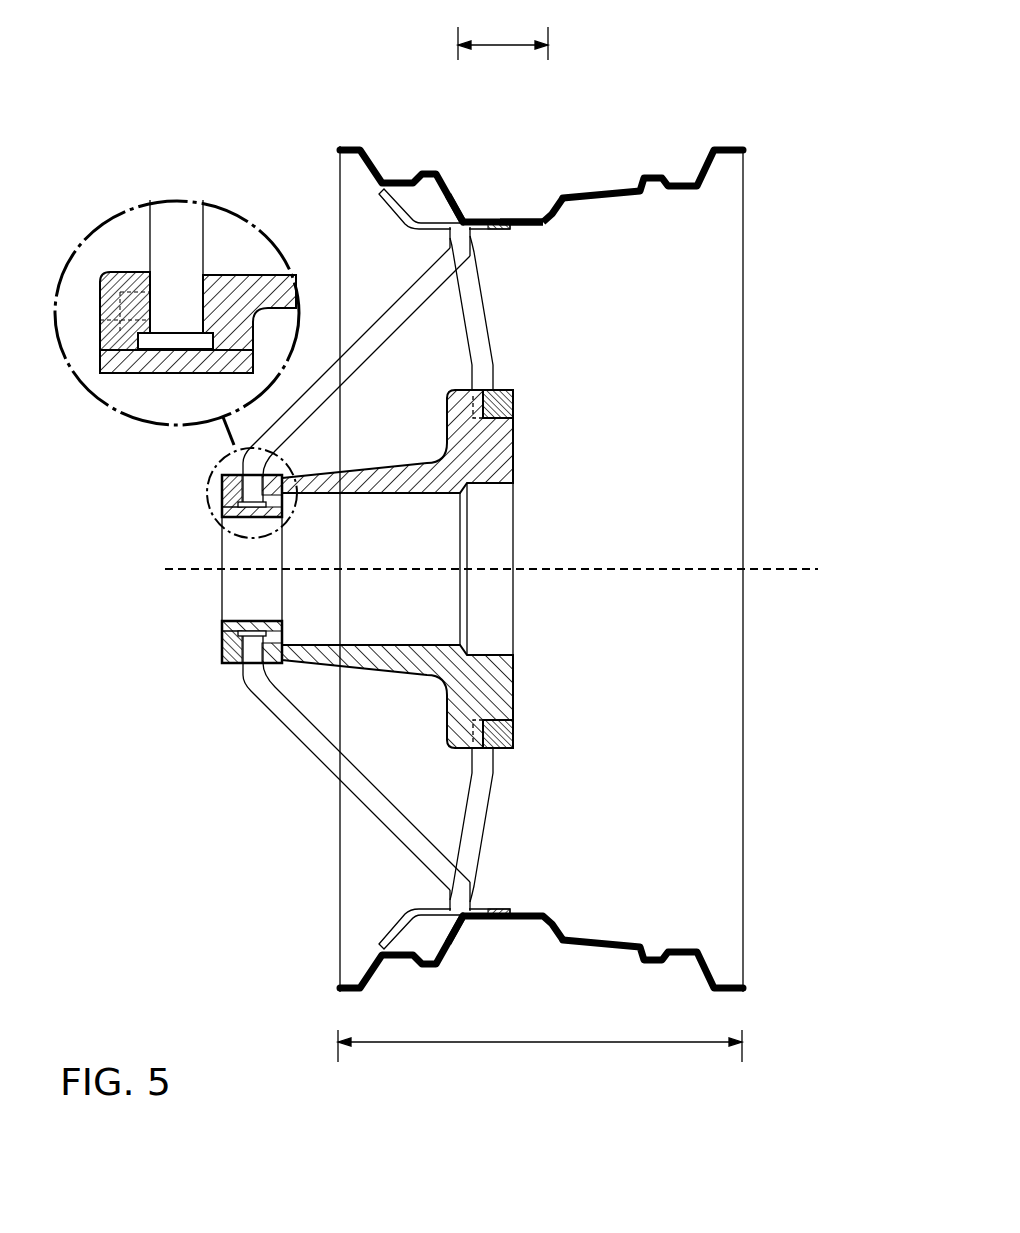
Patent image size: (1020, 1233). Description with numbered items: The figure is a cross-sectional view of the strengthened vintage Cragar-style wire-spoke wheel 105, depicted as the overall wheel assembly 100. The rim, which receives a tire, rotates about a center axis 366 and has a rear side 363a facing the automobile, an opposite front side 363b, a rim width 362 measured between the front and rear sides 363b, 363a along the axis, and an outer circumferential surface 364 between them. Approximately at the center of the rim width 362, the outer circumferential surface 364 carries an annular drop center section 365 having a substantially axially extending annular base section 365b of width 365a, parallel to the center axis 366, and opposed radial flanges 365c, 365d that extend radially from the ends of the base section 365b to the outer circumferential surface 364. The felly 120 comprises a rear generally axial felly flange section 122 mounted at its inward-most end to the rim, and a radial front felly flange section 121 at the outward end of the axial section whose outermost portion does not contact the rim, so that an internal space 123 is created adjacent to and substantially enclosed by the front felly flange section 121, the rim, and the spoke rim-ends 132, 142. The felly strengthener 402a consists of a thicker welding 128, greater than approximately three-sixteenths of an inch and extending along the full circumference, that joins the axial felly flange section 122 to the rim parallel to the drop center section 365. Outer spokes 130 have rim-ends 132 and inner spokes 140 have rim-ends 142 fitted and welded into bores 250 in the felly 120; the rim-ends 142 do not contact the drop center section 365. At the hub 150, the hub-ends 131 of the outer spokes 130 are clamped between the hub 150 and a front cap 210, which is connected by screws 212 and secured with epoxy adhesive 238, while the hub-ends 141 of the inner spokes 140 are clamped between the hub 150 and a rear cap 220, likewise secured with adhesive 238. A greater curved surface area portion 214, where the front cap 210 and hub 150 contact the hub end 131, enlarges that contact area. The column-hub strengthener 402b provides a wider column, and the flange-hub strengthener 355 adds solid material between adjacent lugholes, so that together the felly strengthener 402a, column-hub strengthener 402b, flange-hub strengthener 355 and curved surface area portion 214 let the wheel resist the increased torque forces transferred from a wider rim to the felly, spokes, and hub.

The wheel 100 is at (454, 544).
The strengthened vintage Cragar-style wheel 105 is at (483, 507).
The felly 120 is at (403, 183).
The radial front felly flange section 121 is at (388, 222).
The rear generally axial felly flange section 122 is at (462, 322).
The internal space 123 is at (403, 224).
The welding 128 is at (512, 923).
The outer spokes 130 is at (368, 283).
The hub-ends of outer spokes 131 is at (170, 346).
The rim-ends of outer spokes 132 is at (462, 226).
The inner spokes 140 is at (536, 221).
The hub-ends of inner spokes 141 is at (505, 430).
The rim-ends of inner spokes 142 is at (430, 893).
The hub 150 is at (368, 773).
The front cap 210 is at (222, 468).
The screws 212 is at (117, 352).
The greater curved surface area portion 214 is at (148, 271).
The rear cap 220 is at (360, 540).
The adhesive 238 is at (515, 397).
The bores 250 is at (451, 550).
The flange-hub strengthener 355 is at (360, 540).
The rim width 362 is at (540, 1043).
The rear side 363a is at (746, 823).
The front side 363b is at (336, 823).
The outer circumferential surface 364 is at (615, 182).
The drop center section 365 is at (517, 505).
The width of annular base section 365a is at (503, 43).
The annular base section 365b is at (538, 228).
The radial flange 365c is at (545, 221).
The radial flange 365d is at (460, 215).
The center axis 366 is at (762, 570).
The felly strengthener 402a is at (492, 223).
The column-hub strengthener 402b is at (224, 623).